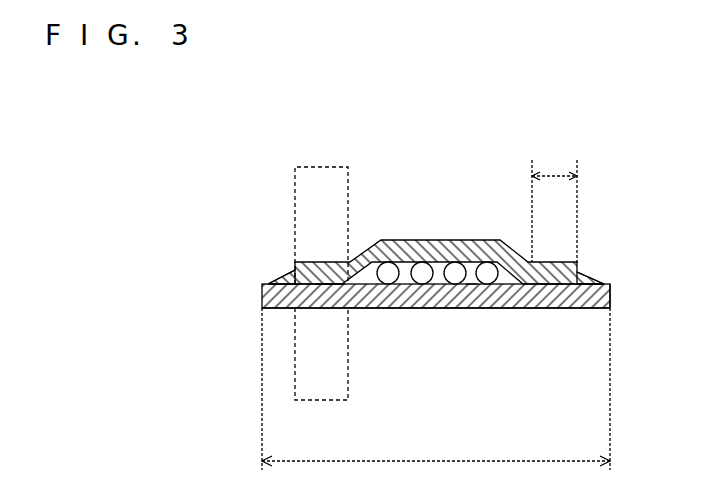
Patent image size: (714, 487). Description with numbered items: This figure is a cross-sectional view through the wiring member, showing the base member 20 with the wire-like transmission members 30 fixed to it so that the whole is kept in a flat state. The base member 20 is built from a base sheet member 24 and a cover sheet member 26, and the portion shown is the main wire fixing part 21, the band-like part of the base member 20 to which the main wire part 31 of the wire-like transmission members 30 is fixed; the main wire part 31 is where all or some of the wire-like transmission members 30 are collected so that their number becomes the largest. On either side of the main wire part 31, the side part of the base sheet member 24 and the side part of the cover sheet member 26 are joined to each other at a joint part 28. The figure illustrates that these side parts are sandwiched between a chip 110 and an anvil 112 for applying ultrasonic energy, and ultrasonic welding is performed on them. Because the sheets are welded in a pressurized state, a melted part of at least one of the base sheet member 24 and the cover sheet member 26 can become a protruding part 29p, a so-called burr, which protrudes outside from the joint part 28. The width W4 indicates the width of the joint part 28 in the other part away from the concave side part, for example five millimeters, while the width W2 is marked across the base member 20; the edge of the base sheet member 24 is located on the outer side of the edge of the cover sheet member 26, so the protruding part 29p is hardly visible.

The base member 20 is at (597, 311).
The main wire fixing part 21 is at (262, 293).
The base sheet member 24 is at (611, 295).
The cover sheet member 26 is at (501, 240).
The joint part 28 is at (323, 290).
The protruding part 29p is at (287, 279).
The wire-like transmission members 30 is at (392, 263).
The main wire part 31 is at (471, 285).
The chip 110 is at (292, 208).
The anvil 112 is at (349, 389).
The width of substrate W2 is at (436, 389).
The width of the other part of the joint part W4 is at (554, 198).